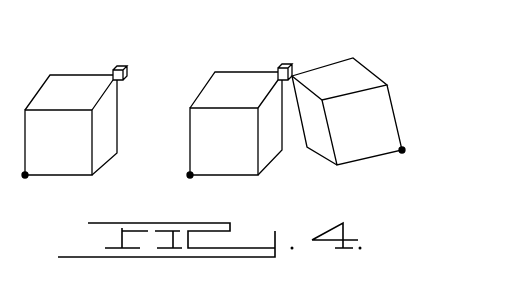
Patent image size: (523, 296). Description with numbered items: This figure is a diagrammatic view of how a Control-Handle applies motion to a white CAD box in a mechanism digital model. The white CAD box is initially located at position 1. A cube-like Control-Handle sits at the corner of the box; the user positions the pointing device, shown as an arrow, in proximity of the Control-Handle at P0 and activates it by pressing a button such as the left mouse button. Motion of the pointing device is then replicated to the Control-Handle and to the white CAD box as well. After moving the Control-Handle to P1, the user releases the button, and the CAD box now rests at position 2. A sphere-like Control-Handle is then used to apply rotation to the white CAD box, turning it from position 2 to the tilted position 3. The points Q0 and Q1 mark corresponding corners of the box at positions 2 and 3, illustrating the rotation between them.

The initial position of the white CAD box 1 is at (74, 122).
The translated position of the white CAD box 2 is at (239, 121).
The rotated position of the white CAD box 3 is at (348, 111).
The initial Control-Handle position P0 is at (114, 44).
The final Control-Handle position P1 is at (283, 44).
The reference point Q0 is at (171, 174).
The reference point Q1 is at (412, 170).